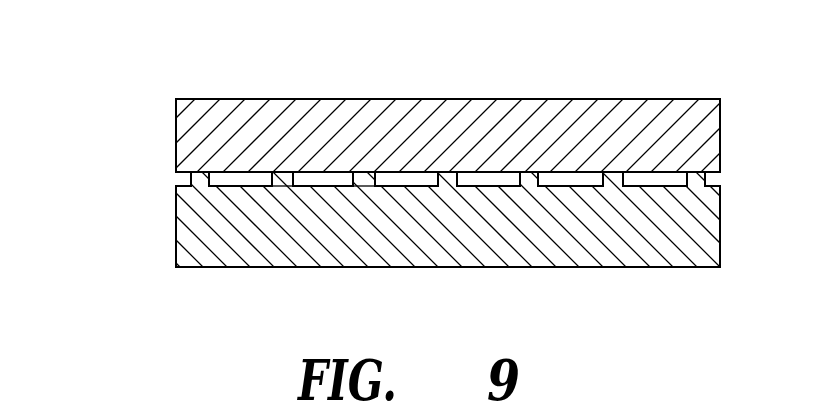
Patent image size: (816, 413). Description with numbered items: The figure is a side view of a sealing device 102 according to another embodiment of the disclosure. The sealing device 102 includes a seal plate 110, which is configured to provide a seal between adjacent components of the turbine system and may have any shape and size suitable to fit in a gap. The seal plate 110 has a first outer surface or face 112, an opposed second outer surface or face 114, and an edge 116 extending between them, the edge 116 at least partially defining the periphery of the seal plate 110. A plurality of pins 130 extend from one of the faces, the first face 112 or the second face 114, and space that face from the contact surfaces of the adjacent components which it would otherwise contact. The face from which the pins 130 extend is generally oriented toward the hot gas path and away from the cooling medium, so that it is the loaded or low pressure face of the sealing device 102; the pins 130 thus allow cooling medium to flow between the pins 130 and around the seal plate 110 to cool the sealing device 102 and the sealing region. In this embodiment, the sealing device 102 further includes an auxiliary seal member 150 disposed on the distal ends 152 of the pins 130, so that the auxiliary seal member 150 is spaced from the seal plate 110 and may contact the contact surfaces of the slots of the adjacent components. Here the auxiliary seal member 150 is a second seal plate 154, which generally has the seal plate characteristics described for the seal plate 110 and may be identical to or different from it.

The sealing device 102 is at (424, 175).
The seal plate 110 is at (449, 185).
The first outer surface or face 112 is at (655, 183).
The second outer surface or face 114 is at (615, 268).
The edge 116 is at (722, 218).
The pins 130 is at (253, 180).
The auxiliary seal member 150 is at (449, 111).
The distal ends 152 is at (283, 170).
The second seal plate 154 is at (597, 130).